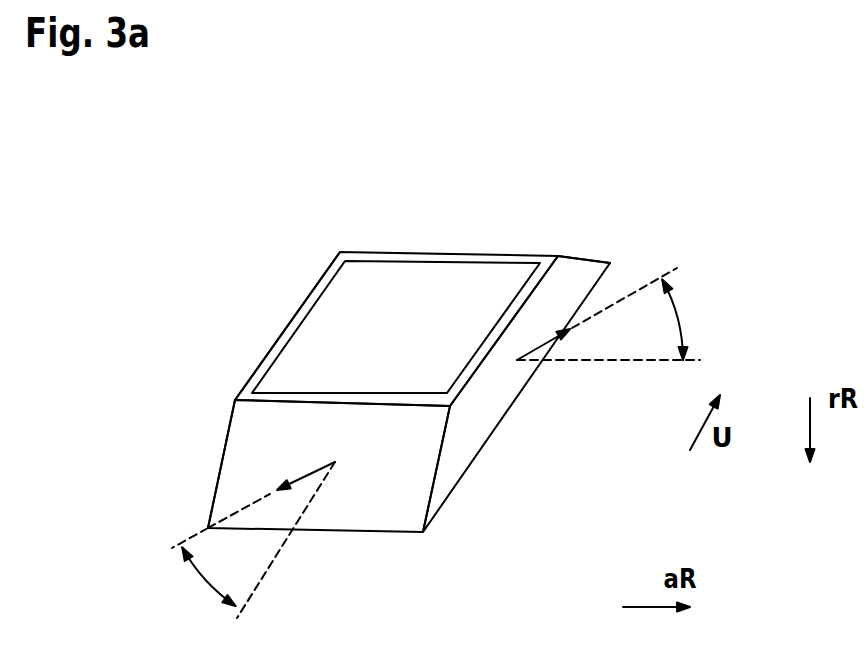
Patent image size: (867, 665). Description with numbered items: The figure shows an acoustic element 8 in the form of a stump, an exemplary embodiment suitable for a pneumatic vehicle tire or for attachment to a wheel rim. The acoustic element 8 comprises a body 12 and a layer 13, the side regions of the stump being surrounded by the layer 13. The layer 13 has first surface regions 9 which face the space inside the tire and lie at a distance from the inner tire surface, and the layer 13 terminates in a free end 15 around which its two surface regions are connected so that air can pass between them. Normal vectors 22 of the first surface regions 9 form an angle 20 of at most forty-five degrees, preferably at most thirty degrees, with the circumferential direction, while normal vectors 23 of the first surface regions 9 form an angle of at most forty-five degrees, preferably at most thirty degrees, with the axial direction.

The acoustic element 8 is at (366, 397).
The first surface region 9 is at (497, 388).
The body 12 is at (417, 302).
The layer 13 is at (263, 362).
The free end 15 is at (505, 315).
The angle 20 is at (678, 315).
The normal vector 22 is at (310, 473).
The normal vector 23 is at (537, 352).